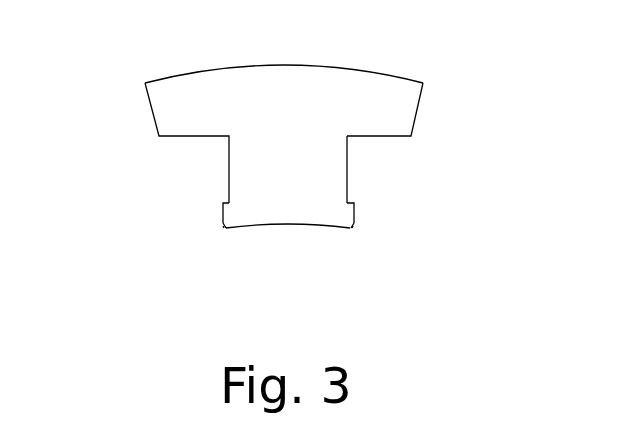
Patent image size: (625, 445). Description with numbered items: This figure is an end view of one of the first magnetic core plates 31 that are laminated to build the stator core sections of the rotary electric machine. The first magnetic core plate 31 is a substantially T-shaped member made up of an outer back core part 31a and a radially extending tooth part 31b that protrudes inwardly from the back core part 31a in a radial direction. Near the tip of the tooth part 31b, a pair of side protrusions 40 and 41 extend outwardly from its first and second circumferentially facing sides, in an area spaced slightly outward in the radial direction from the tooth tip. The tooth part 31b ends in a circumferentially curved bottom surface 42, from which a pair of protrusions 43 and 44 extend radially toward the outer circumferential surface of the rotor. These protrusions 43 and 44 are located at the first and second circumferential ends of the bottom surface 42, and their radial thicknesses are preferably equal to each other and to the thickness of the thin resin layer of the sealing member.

The first magnetic core plate 31 is at (126, 60).
The outer back core part 31a is at (388, 82).
The tooth part 31b is at (347, 162).
The side protrusion 40 is at (223, 203).
The side protrusion 41 is at (222, 229).
The circumferentially curved bottom surface 42 is at (288, 227).
The protrusion 43 is at (225, 230).
The protrusion 44 is at (357, 230).